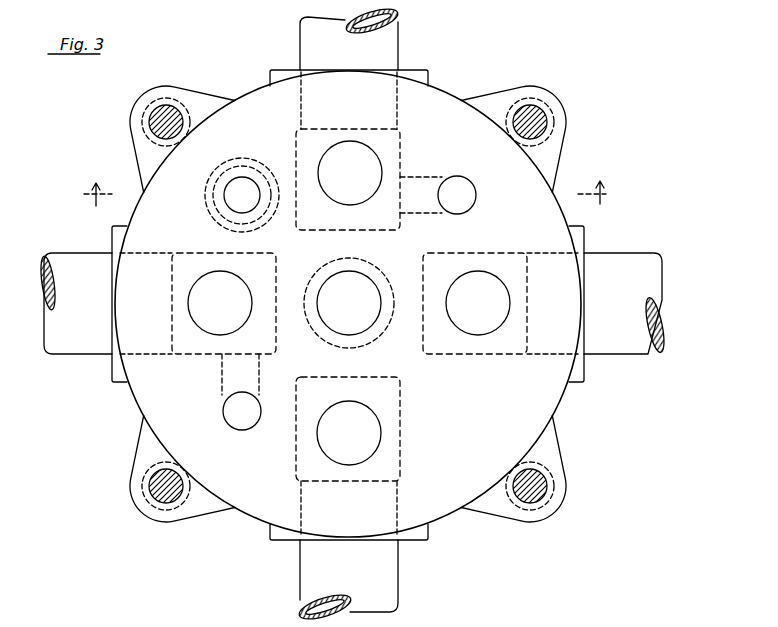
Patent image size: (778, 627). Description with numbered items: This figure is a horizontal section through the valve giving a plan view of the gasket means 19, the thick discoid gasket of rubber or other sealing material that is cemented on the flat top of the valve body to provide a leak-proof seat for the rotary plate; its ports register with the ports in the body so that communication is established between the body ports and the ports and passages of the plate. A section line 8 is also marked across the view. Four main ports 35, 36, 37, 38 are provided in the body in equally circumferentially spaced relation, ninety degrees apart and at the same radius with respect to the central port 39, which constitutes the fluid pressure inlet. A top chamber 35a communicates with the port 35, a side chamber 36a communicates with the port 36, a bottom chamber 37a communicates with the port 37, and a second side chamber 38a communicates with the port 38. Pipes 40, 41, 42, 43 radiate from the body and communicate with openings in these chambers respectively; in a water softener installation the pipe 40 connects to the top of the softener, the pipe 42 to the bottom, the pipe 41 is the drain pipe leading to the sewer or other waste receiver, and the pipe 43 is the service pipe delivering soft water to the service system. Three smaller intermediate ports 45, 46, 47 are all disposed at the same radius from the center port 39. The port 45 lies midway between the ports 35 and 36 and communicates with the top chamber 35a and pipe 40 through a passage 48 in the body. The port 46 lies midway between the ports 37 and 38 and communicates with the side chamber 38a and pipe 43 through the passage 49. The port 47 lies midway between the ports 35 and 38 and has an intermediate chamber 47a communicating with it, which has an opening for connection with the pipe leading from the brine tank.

The gasket means 19 is at (447, 503).
The section line 8- 8 is at (345, 197).
The pipe 40 is at (372, 46).
The pipe 41 is at (628, 262).
The pipe 42 is at (388, 588).
The pipe 43 is at (74, 343).
The main port 35 is at (380, 160).
The top chamber 35a is at (344, 128).
The main port 36 is at (485, 325).
The side chamber 36a is at (491, 255).
The main port 37 is at (378, 440).
The bottom chamber 37a is at (398, 470).
The main port 38 is at (238, 318).
The second side chamber 38a is at (192, 352).
The central port 39 is at (357, 325).
The intermediate port 45 is at (467, 190).
The intermediate port 46 is at (250, 422).
The intermediate port 47 is at (242, 178).
The intermediate chamber 47a is at (222, 222).
The passage 48 is at (425, 176).
The passage 49 is at (260, 373).